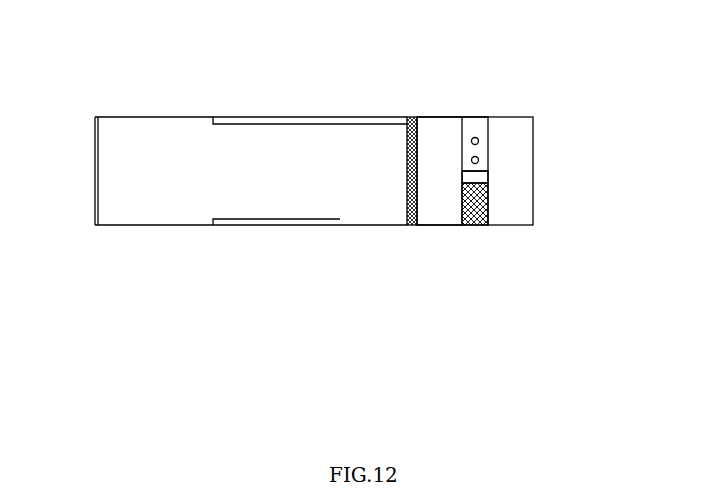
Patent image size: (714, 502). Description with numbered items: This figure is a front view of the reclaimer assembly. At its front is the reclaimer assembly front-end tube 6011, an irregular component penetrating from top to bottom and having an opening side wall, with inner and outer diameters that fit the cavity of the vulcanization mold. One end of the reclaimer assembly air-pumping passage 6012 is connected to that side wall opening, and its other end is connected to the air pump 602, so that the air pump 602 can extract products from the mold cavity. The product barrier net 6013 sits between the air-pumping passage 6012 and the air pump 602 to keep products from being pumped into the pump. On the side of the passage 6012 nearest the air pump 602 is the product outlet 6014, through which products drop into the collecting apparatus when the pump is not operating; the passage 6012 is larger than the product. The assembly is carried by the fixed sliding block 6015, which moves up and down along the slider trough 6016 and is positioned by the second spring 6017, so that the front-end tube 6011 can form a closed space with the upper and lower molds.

The air pump 602 is at (508, 150).
The reclaimer assembly front-end tube 6011 is at (168, 117).
The reclaimer assembly air-pumping passage 6012 is at (301, 117).
The product barrier net 6013 is at (407, 145).
The product outlet 6014 is at (373, 218).
The fixed sliding block 6015 is at (466, 144).
The slider trough 6016 is at (471, 190).
The second spring 6017 is at (468, 206).